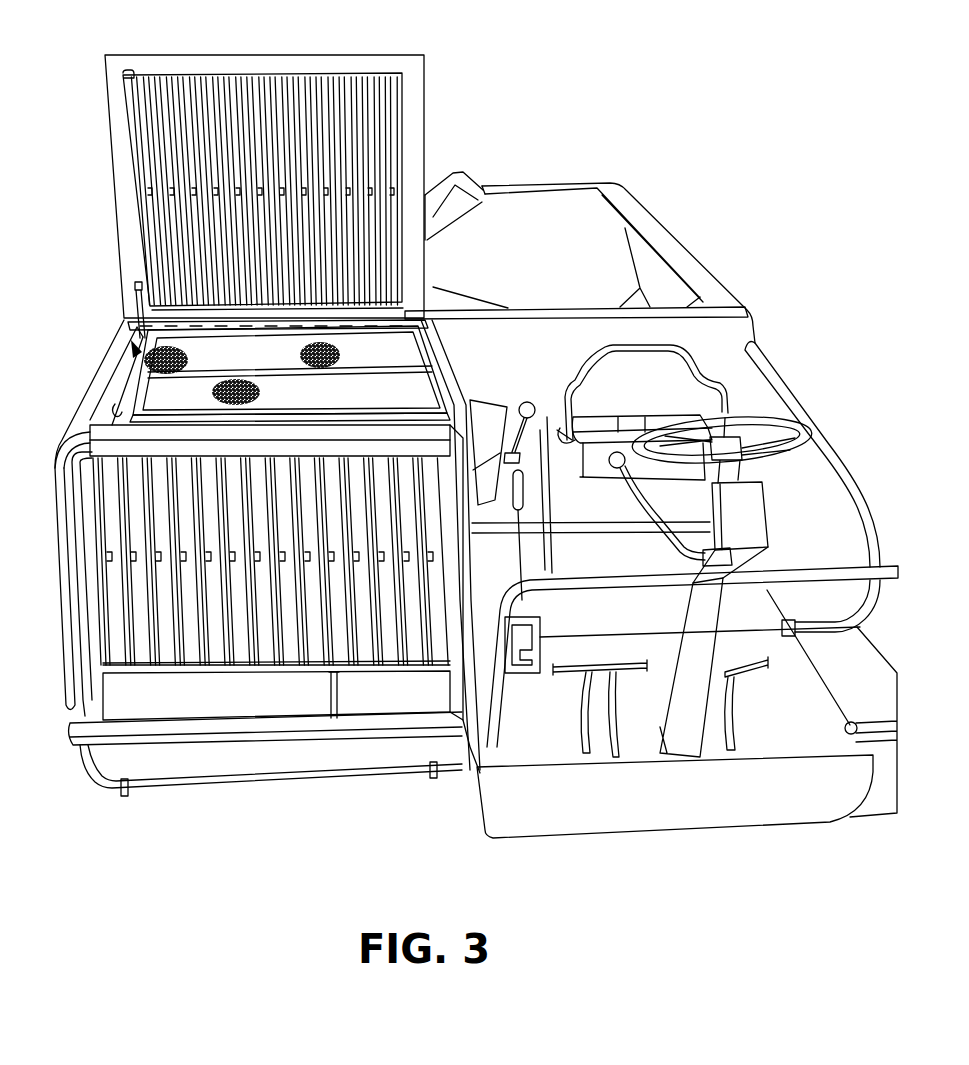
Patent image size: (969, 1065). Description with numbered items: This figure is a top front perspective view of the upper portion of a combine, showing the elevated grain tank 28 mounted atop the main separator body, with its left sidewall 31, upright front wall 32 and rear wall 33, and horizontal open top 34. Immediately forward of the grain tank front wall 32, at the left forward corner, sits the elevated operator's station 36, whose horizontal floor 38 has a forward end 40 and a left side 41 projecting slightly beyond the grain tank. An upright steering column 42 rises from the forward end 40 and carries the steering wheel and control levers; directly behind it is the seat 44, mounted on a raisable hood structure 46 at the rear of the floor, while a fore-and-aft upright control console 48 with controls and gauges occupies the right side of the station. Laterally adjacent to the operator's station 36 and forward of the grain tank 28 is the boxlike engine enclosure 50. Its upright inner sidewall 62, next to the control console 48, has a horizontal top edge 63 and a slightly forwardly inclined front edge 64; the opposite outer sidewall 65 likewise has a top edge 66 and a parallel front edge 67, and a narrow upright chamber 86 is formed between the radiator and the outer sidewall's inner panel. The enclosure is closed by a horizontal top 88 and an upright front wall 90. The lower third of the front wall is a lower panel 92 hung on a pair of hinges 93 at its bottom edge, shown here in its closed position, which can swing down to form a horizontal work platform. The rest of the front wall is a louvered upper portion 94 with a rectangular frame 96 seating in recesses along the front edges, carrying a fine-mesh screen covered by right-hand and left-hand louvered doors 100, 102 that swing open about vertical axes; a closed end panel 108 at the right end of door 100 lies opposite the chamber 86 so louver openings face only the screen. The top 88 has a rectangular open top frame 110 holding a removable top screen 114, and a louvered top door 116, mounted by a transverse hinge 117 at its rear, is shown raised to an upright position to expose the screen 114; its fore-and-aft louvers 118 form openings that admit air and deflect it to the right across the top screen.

The grain tank 28 is at (648, 183).
The sidewall 31 is at (667, 290).
The front wall 32 is at (621, 392).
The rear wall 33 is at (481, 258).
The open top 34 is at (549, 184).
The operator's station 36 is at (802, 358).
The floor 38 is at (660, 707).
The forward end 40 is at (668, 732).
The left side 41 is at (828, 680).
The steering column 42 is at (757, 516).
The seat 44 is at (634, 458).
The hood structure 46 is at (591, 495).
The control console 48 is at (488, 410).
The engine enclosure 50 is at (233, 806).
The inner sidewall 62 is at (456, 355).
The top edge 63 is at (437, 330).
The front edge 64 is at (462, 595).
The outer sidewall 65 is at (70, 405).
The top edge 66 is at (106, 356).
The front edge 67 is at (80, 663).
The chamber 86 is at (128, 392).
The top 88 is at (437, 101).
The front wall 90 is at (440, 684).
The lower panel 92 is at (276, 572).
The hinges 93 is at (125, 797).
The louvered upper portion 94 is at (95, 547).
The frame 96 is at (436, 413).
The louvered door 100 is at (140, 667).
The louvered door 102 is at (410, 660).
The end panel 108 is at (116, 668).
The top frame 110 is at (128, 345).
The top screen 114 is at (290, 370).
The top door 116 is at (259, 64).
The hinge 117 is at (230, 325).
The louvers 118 is at (321, 85).